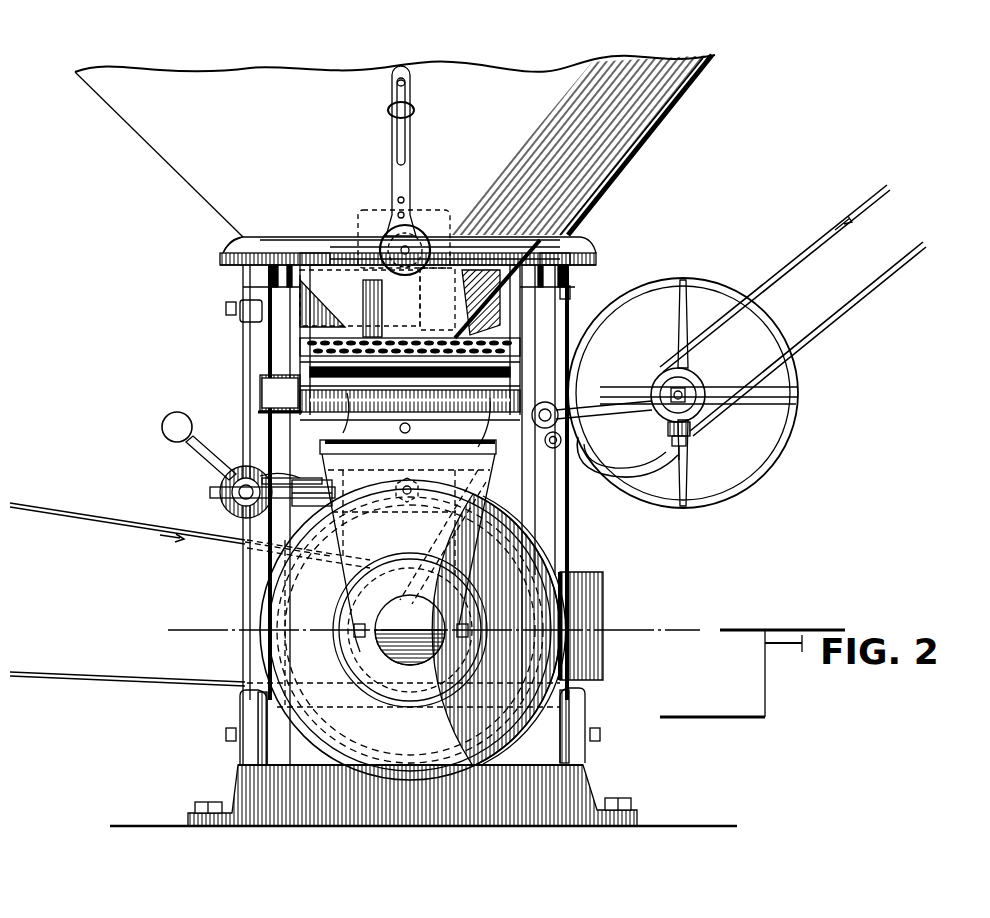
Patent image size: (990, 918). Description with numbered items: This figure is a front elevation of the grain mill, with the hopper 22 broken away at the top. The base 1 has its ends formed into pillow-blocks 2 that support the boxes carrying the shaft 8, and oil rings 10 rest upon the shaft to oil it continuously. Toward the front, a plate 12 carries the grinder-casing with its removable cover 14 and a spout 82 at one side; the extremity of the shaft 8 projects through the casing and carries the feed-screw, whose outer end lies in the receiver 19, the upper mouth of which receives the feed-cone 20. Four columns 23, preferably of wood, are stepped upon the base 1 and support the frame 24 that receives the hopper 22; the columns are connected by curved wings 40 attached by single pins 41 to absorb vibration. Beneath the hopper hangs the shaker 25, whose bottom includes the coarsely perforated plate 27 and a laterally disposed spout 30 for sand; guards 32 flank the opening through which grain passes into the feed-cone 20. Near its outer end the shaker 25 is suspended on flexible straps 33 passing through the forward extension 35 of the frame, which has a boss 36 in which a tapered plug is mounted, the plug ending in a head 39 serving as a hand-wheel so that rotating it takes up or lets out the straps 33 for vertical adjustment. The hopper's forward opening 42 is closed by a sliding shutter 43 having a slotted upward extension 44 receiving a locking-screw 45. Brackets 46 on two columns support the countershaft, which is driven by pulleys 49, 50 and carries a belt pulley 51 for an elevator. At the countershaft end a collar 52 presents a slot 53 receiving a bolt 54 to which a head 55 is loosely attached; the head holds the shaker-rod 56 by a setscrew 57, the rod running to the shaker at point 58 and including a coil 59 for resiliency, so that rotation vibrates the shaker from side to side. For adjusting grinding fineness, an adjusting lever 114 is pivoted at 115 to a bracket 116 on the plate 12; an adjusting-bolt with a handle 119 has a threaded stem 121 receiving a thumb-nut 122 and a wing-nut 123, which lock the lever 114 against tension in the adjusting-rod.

The base 1 is at (243, 792).
The pillow-blocks 2 is at (272, 755).
The shaft 8 is at (414, 627).
The oil rings 10 is at (491, 667).
The plate 12 is at (528, 508).
The removable cover 14 is at (307, 701).
The receiver 19 is at (409, 537).
The feed-cone 20 is at (479, 452).
The hopper 22 is at (703, 98).
The columns 23 is at (250, 333).
The frame 24 is at (590, 240).
The shaker 25 is at (240, 308).
The perforated plate 27 is at (300, 347).
The spout 30 is at (262, 392).
The guards 32 is at (520, 378).
The straps 33 is at (318, 253).
The forward extension 35 is at (262, 242).
The boss 36 is at (425, 234).
The head 39 is at (373, 253).
The curved wings 40 is at (243, 710).
The pins 41 is at (234, 307).
The opening 42 is at (420, 308).
The sliding shutter 43 is at (446, 301).
The slotted upward extension 44 is at (392, 152).
The locking-screw 45 is at (414, 111).
The brackets 46 is at (600, 503).
The pulley 49 is at (798, 393).
The pulley 50 is at (406, 604).
The belt pulley 51 is at (720, 408).
The collar 52 is at (706, 385).
The slot 53 is at (690, 380).
The bolt 54 is at (712, 420).
The head 55 is at (698, 440).
The shaker-rod 56 is at (604, 392).
The setscrew 57 is at (681, 440).
The attachment point 58 is at (400, 428).
The coil 59 is at (540, 430).
The spout 82 is at (604, 612).
The adjusting lever 114 is at (258, 471).
The pivot 115 is at (323, 448).
The bracket 116 is at (250, 512).
The handle 119 is at (172, 424).
The stem 121 is at (234, 503).
The thumb-nut 122 is at (222, 480).
The wing-nut 123 is at (210, 492).